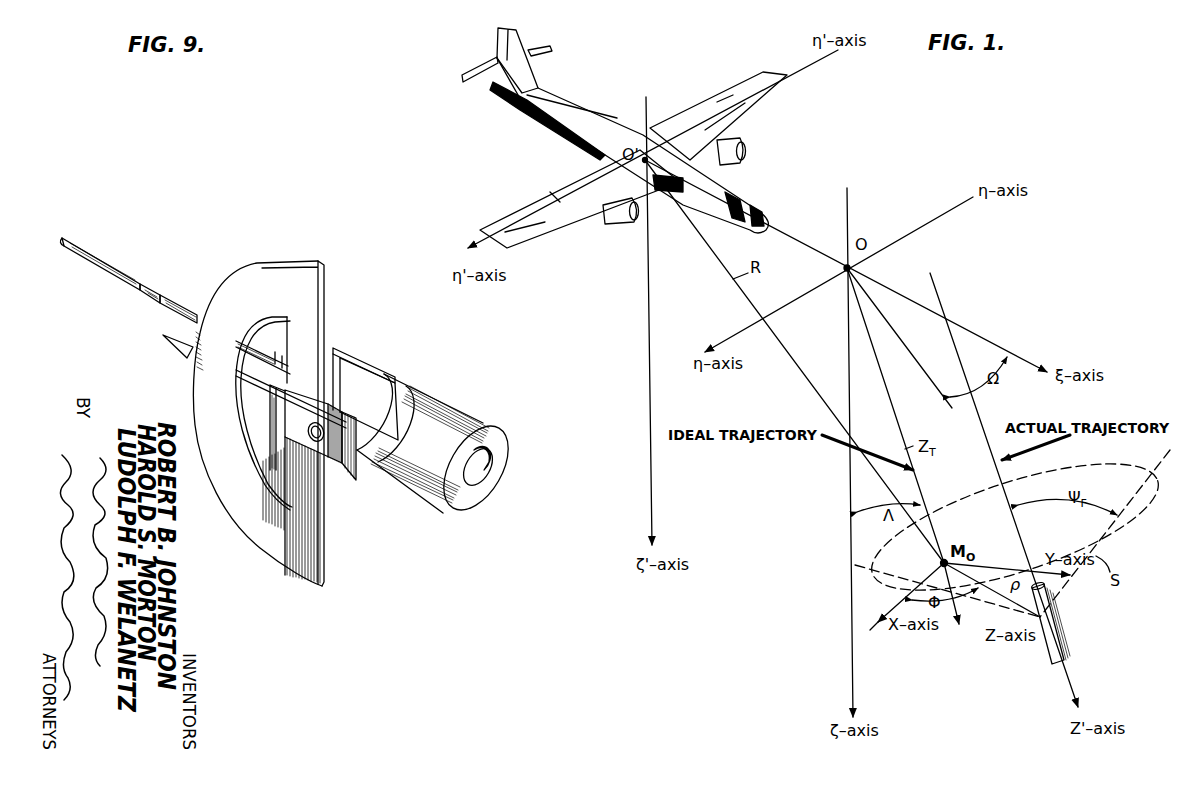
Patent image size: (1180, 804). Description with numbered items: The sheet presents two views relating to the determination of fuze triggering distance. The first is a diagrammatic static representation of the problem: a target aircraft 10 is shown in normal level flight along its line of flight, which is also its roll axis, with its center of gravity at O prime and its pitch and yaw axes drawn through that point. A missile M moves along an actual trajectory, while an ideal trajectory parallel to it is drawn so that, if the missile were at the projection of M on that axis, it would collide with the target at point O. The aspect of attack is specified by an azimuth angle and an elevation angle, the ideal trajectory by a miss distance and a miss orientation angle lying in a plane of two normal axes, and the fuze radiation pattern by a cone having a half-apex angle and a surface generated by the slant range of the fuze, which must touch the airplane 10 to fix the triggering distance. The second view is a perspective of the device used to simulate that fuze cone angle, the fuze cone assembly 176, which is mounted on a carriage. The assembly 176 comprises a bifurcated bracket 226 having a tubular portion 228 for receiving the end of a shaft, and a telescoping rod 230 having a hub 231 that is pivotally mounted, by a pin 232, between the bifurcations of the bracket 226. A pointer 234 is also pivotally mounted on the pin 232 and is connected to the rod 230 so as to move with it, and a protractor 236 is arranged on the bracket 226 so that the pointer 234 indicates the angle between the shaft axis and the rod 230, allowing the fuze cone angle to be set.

In FIG. 1, the target aircraft 10 is at (752, 82).
In FIG. 9, the telescoping rod 230 is at (187, 285).
In FIG. 9, the protractor 236 is at (323, 288).
In FIG. 9, the pointer 234 is at (180, 350).
In FIG. 9, the hub 231 is at (343, 372).
In FIG. 9, the bifurcated bracket 226 is at (418, 392).
In FIG. 9, the tubular portion 228 is at (466, 416).
In FIG. 9, the pin 232 is at (307, 434).
In FIG. 9, the fuze cone assembly 176 is at (358, 472).
In FIG. 9, the missile M is at (313, 425).
In FIG. 1, the missile M is at (1068, 655).